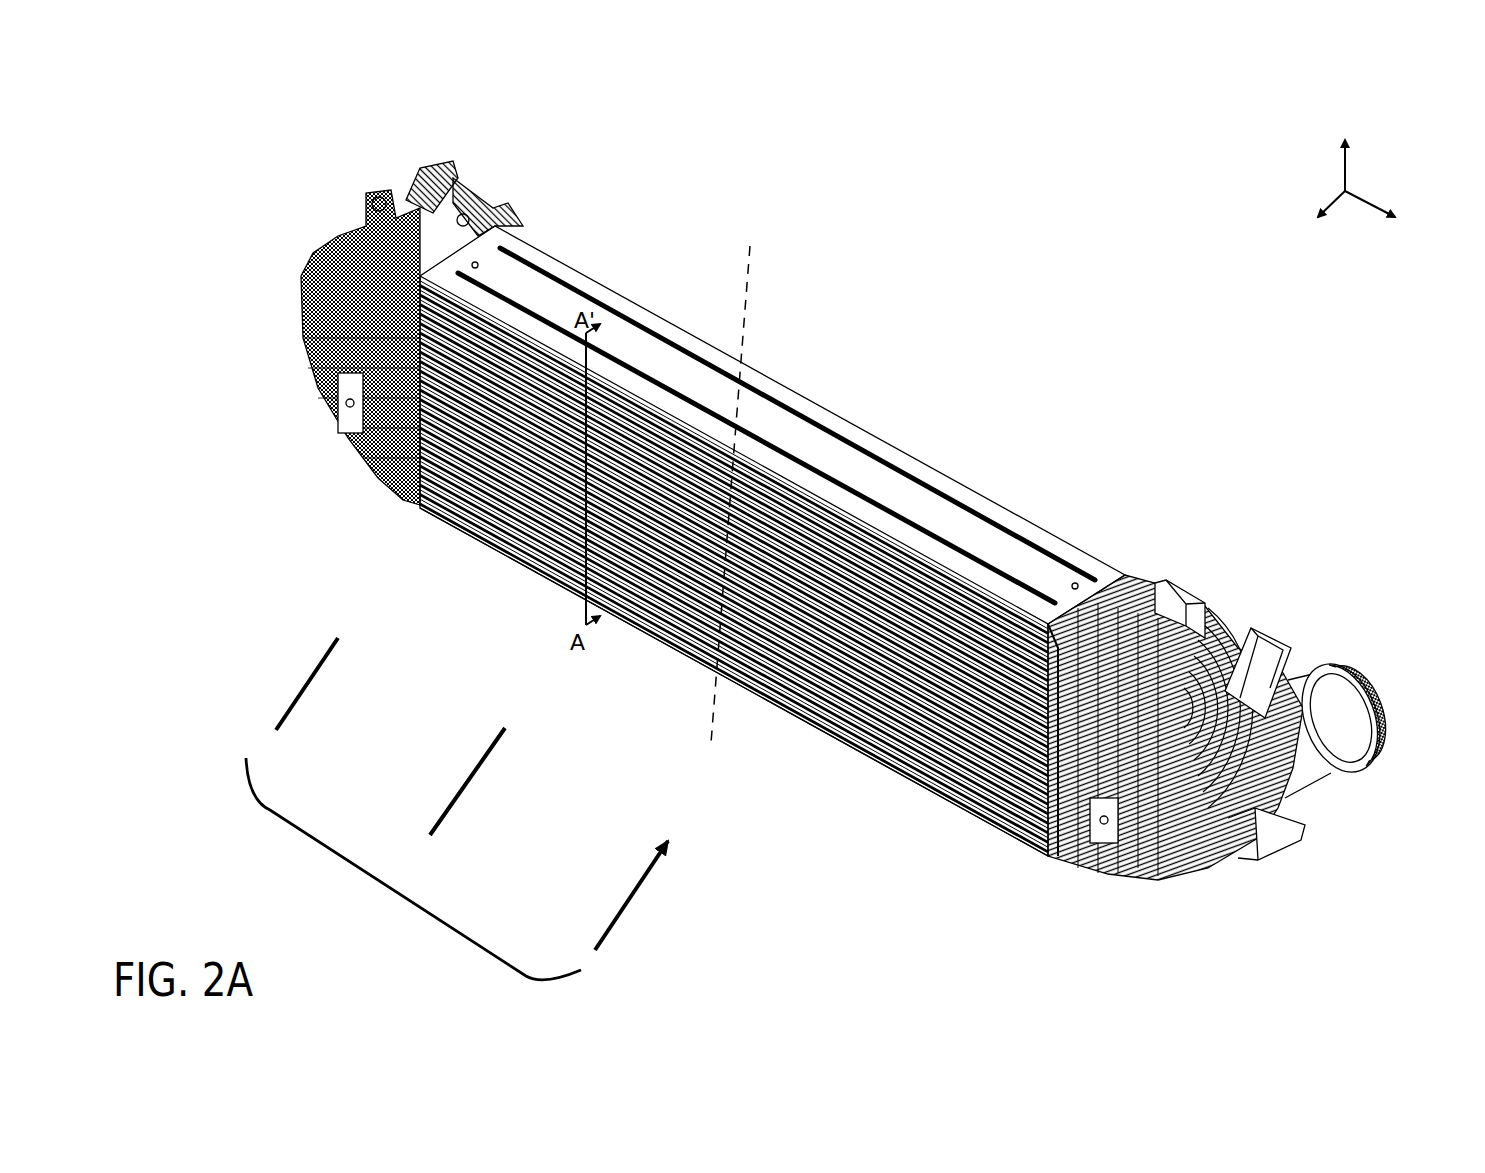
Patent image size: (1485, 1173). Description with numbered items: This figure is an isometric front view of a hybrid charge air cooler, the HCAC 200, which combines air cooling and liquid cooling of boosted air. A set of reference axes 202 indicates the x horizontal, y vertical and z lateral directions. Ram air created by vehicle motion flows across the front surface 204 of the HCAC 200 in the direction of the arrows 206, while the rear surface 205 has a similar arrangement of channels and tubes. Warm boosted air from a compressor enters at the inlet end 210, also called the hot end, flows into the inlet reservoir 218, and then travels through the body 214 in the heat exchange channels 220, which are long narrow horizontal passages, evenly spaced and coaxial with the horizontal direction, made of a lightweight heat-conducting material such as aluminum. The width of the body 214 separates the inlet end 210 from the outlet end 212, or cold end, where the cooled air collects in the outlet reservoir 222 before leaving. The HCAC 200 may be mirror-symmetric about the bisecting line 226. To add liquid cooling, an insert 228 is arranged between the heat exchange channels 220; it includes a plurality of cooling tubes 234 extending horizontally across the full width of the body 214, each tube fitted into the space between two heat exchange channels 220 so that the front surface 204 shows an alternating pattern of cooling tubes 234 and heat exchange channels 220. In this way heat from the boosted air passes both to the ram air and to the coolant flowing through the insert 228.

The HCAC 200 is at (763, 505).
The reference axes 202 is at (1385, 118).
The front surface 204 is at (731, 581).
The rear surface 205 is at (910, 436).
The arrows 206 is at (388, 885).
The inlet end 210 is at (443, 299).
The outlet end 212 is at (1224, 694).
The body 214 is at (595, 205).
The inlet reservoir 218 is at (1133, 602).
The heat exchange channels 220 is at (980, 743).
The outlet reservoir 222 is at (445, 217).
The bisecting line 226 is at (754, 482).
The insert 228 is at (992, 862).
The cooling tubes 234 is at (795, 627).